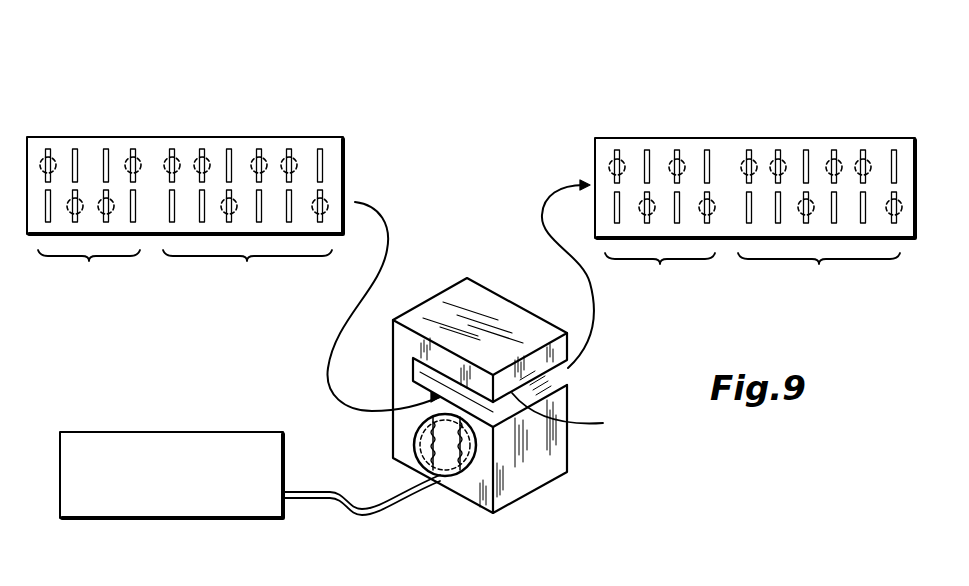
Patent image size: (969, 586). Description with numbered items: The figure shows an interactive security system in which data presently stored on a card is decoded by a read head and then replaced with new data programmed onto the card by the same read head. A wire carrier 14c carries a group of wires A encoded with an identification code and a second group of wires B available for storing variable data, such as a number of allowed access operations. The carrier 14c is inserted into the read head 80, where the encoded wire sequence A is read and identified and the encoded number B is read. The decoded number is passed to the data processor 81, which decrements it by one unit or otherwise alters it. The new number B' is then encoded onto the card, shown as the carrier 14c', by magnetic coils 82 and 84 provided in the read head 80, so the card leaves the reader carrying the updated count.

The wire carrier 14c is at (185, 194).
The wire carrier after re-encoding 14c' is at (755, 195).
The read head 80 is at (462, 314).
The data processor 81 is at (244, 440).
The magnetic coil 82 is at (420, 415).
The magnetic coil 84 is at (472, 455).